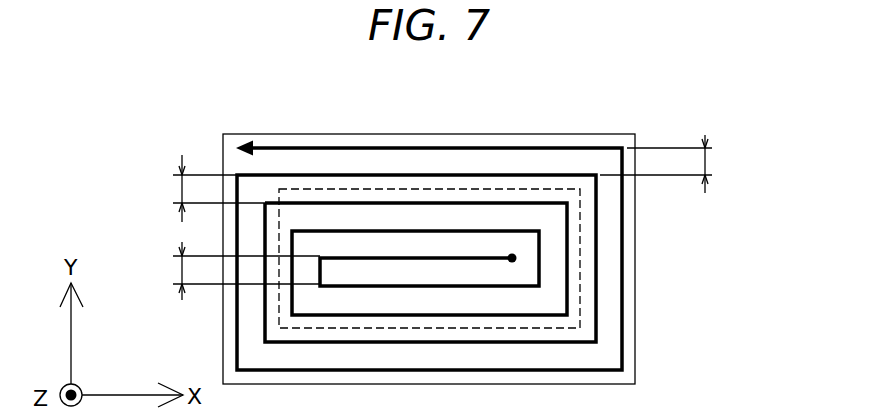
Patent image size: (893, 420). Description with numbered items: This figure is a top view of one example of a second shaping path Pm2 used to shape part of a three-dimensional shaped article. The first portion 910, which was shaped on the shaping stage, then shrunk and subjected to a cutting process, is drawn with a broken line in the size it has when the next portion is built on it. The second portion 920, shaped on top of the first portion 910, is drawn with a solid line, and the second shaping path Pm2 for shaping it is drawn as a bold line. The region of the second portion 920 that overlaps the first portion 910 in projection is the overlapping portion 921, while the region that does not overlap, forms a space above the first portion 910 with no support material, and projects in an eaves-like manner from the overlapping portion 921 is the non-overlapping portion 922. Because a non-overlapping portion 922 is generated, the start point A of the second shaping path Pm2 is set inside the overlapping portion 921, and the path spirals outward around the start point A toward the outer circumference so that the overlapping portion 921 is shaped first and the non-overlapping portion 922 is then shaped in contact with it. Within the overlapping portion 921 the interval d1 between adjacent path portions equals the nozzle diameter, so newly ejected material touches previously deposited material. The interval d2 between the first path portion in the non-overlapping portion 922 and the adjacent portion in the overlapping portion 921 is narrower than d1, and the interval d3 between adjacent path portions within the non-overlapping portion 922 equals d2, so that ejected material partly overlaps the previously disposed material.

The first portion 910 is at (553, 330).
The second portion 920 is at (512, 256).
The overlapping portion 921 is at (548, 300).
The non-overlapping portion 922 is at (600, 247).
The second shaping path Pm2 is at (320, 147).
The start point A is at (512, 259).
The interval d1 is at (231, 271).
The interval d2 is at (203, 188).
The interval d3 is at (672, 164).